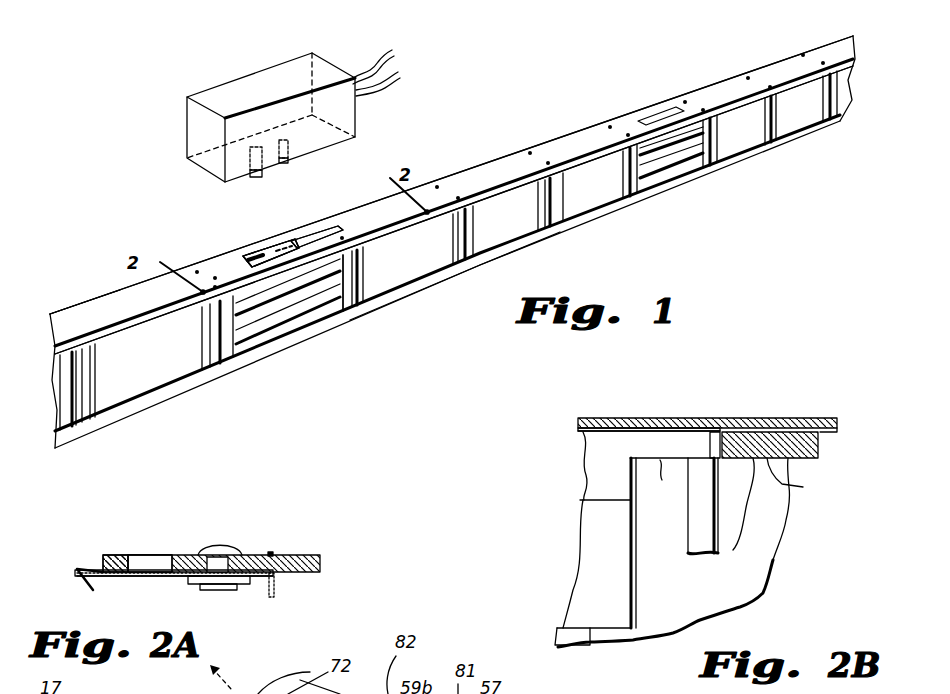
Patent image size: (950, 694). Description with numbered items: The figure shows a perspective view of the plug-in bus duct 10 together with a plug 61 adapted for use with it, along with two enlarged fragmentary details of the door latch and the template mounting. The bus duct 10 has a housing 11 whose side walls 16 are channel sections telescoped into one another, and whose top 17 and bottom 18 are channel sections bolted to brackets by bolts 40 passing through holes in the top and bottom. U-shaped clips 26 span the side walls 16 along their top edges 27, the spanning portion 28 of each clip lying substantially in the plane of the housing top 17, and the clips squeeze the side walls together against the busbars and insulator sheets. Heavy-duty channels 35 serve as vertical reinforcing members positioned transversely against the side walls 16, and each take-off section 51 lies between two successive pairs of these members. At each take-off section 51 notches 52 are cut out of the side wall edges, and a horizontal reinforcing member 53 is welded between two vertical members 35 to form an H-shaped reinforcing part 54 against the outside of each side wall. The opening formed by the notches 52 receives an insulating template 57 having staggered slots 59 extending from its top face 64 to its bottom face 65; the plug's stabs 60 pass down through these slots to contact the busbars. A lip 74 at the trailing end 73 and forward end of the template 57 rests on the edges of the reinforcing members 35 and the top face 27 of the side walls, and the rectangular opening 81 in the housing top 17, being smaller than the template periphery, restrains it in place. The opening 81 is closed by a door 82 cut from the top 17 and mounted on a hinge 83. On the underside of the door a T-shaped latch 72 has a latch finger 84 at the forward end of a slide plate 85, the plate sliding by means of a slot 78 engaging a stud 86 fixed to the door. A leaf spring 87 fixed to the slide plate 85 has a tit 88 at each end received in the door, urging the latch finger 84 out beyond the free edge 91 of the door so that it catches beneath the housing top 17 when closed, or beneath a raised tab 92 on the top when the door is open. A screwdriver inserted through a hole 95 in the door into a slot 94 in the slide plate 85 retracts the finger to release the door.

In FIG. 1, the plug-in bus duct 10 is at (650, 222).
In FIG. 1, the housing 11 is at (515, 230).
In FIG. 2B, the housing 11 is at (768, 596).
In FIG. 1, the side walls 16 is at (150, 358).
In FIG. 2B, the side walls 16 is at (702, 462).
In FIG. 1, the top 17 is at (482, 165).
In FIG. 2B, the top 17 is at (782, 418).
In FIG. 1, the bottom 18 is at (398, 302).
In FIG. 2B, the U-shaped clips 26 is at (828, 448).
In FIG. 2B, the top edges of side walls 27 is at (660, 460).
In FIG. 2B, the spanning portion 28 is at (780, 504).
In FIG. 1, the heavy-duty channels 35 is at (82, 423).
In FIG. 2B, the heavy-duty channels 35 is at (740, 515).
In FIG. 1, the bolts 40 is at (70, 338).
In FIG. 1, the take-off section 51 is at (297, 210).
In FIG. 2B, the notches 52 is at (565, 628).
In FIG. 1, the horizontal reinforcing member 53 is at (364, 273).
In FIG. 1, the H-shaped reinforcing part 54 is at (288, 326).
In FIG. 2B, the template 57 is at (590, 485).
In FIG. 1, the slots 59 is at (243, 262).
In FIG. 1, the stabs 60 is at (254, 178).
In FIG. 1, the plug 61 is at (263, 82).
In FIG. 2B, the top face 64 is at (585, 448).
In FIG. 2B, the bottom face 65 is at (582, 646).
In FIG. 2A, the latch 72 is at (258, 605).
In FIG. 2B, the trailing end 73 is at (688, 436).
In FIG. 2B, the lip 74 is at (668, 440).
In FIG. 2A, the slot 78 is at (183, 577).
In FIG. 1, the opening 81 is at (245, 262).
In FIG. 1, the door 82 is at (318, 232).
In FIG. 2A, the door 82 is at (313, 560).
In FIG. 1, the hinge 83 is at (287, 245).
In FIG. 2A, the latch finger 84 is at (103, 570).
In FIG. 2A, the slide plate 85 is at (160, 580).
In FIG. 2A, the stud 86 is at (220, 562).
In FIG. 2A, the leaf spring 87 is at (277, 590).
In FIG. 2A, the tit 88 is at (275, 558).
In FIG. 2A, the free edge 91 is at (98, 568).
In FIG. 1, the tab 92 is at (345, 233).
In FIG. 2A, the slot 94 is at (131, 578).
In FIG. 2A, the hole 95 is at (153, 562).